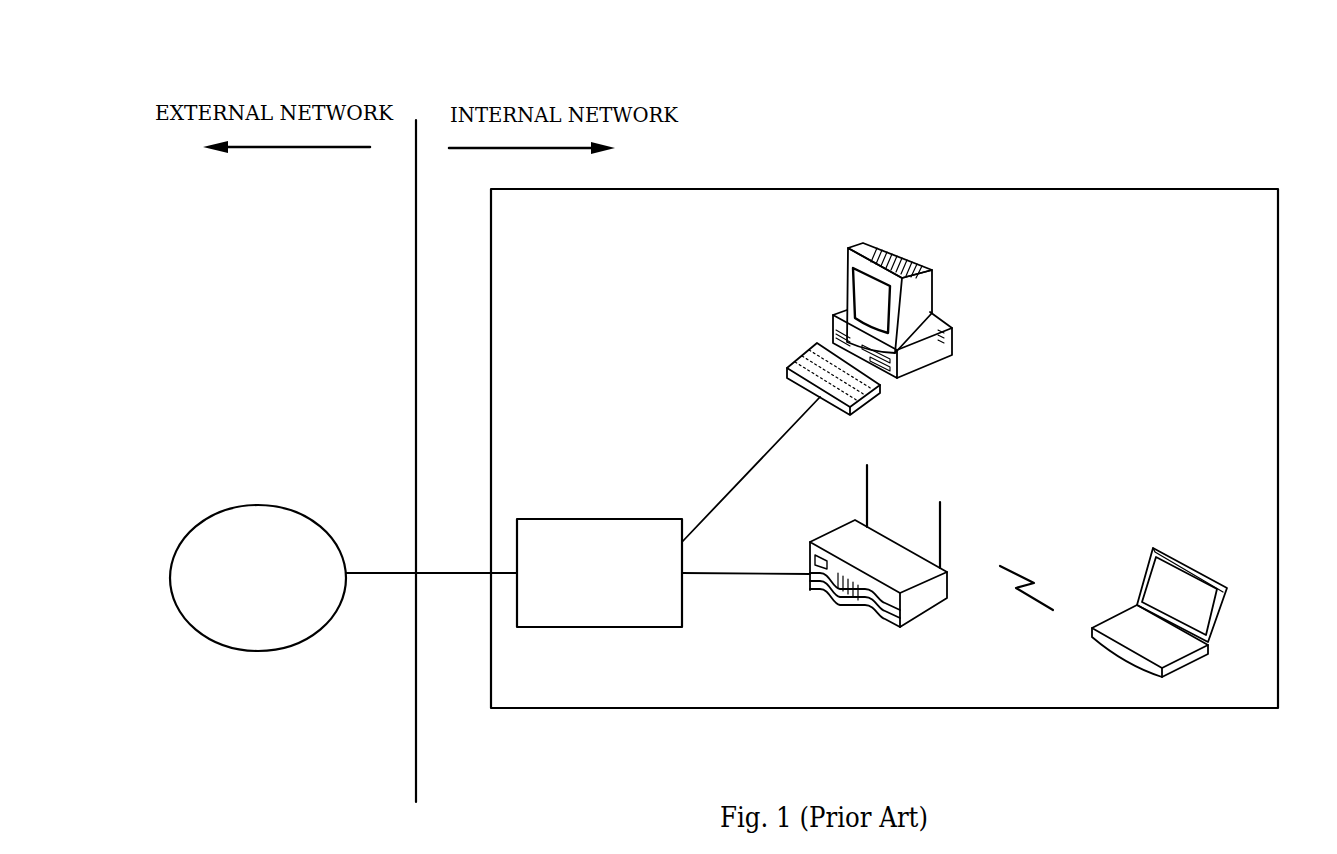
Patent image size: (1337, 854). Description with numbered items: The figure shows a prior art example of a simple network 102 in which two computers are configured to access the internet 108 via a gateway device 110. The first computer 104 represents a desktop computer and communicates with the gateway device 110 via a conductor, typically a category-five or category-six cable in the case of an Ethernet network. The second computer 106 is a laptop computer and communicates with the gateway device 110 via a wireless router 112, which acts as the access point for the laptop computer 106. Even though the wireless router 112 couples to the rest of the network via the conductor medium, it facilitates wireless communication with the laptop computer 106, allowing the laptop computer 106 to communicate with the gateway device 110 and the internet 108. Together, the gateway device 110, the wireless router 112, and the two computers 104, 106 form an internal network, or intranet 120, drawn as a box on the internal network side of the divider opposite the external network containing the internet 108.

The simple network 102 is at (1109, 36).
The desktop computer 104 is at (925, 361).
The laptop computer 106 is at (1197, 655).
The internet 108 is at (292, 508).
The gateway device 110 is at (682, 607).
The wireless router 112 is at (903, 627).
The intranet 120 is at (977, 708).